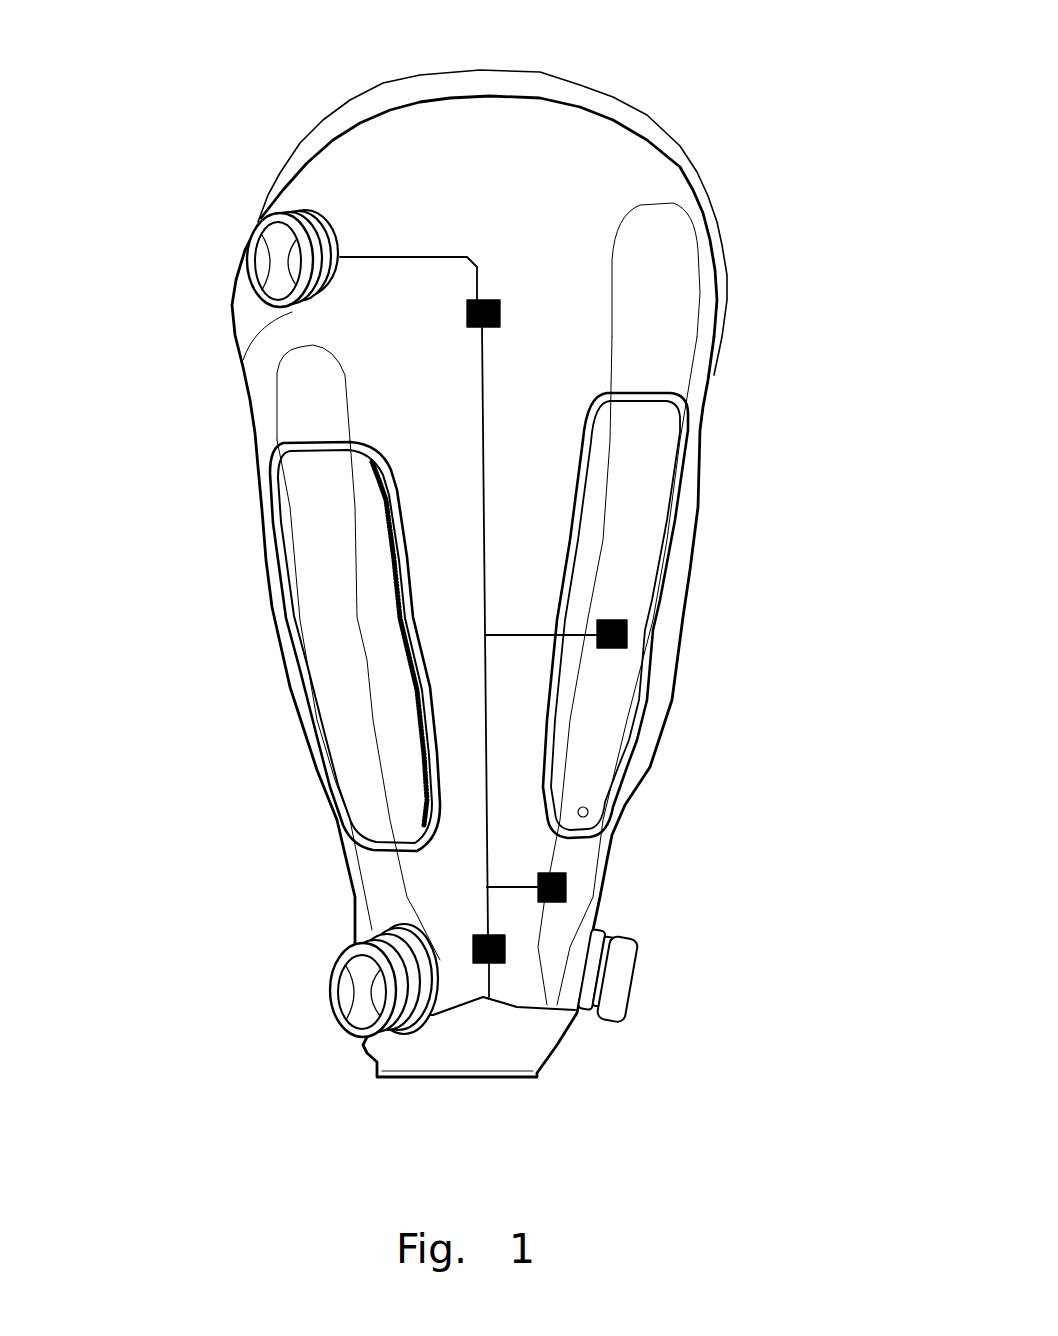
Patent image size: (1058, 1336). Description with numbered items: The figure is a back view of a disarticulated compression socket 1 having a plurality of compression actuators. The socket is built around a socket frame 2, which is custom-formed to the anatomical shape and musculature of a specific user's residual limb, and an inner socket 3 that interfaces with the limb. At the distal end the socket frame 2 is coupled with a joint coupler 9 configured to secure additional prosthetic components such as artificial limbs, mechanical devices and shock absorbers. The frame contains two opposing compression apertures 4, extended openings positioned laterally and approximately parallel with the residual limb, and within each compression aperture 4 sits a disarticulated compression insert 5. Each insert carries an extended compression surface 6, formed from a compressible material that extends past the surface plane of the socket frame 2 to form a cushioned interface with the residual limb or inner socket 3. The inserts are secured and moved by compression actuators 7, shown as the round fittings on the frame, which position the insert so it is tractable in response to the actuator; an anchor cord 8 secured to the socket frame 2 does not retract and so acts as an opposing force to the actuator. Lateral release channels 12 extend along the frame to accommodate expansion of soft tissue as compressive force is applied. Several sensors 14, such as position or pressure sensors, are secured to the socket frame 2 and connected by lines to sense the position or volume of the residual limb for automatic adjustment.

The disarticulated compression socket 1 is at (750, 134).
The socket frame 2 is at (457, 220).
The inner socket 3 is at (397, 97).
The compression aperture 4 is at (434, 830).
The disarticulated compression insert 5 is at (612, 598).
The extended compression surface 6 is at (417, 705).
The compression actuator 7 is at (253, 277).
The anchor cord 8 is at (663, 205).
The joint coupler 9 is at (470, 1086).
The lateral release channel 12 is at (503, 503).
The sensor 14 is at (500, 313).